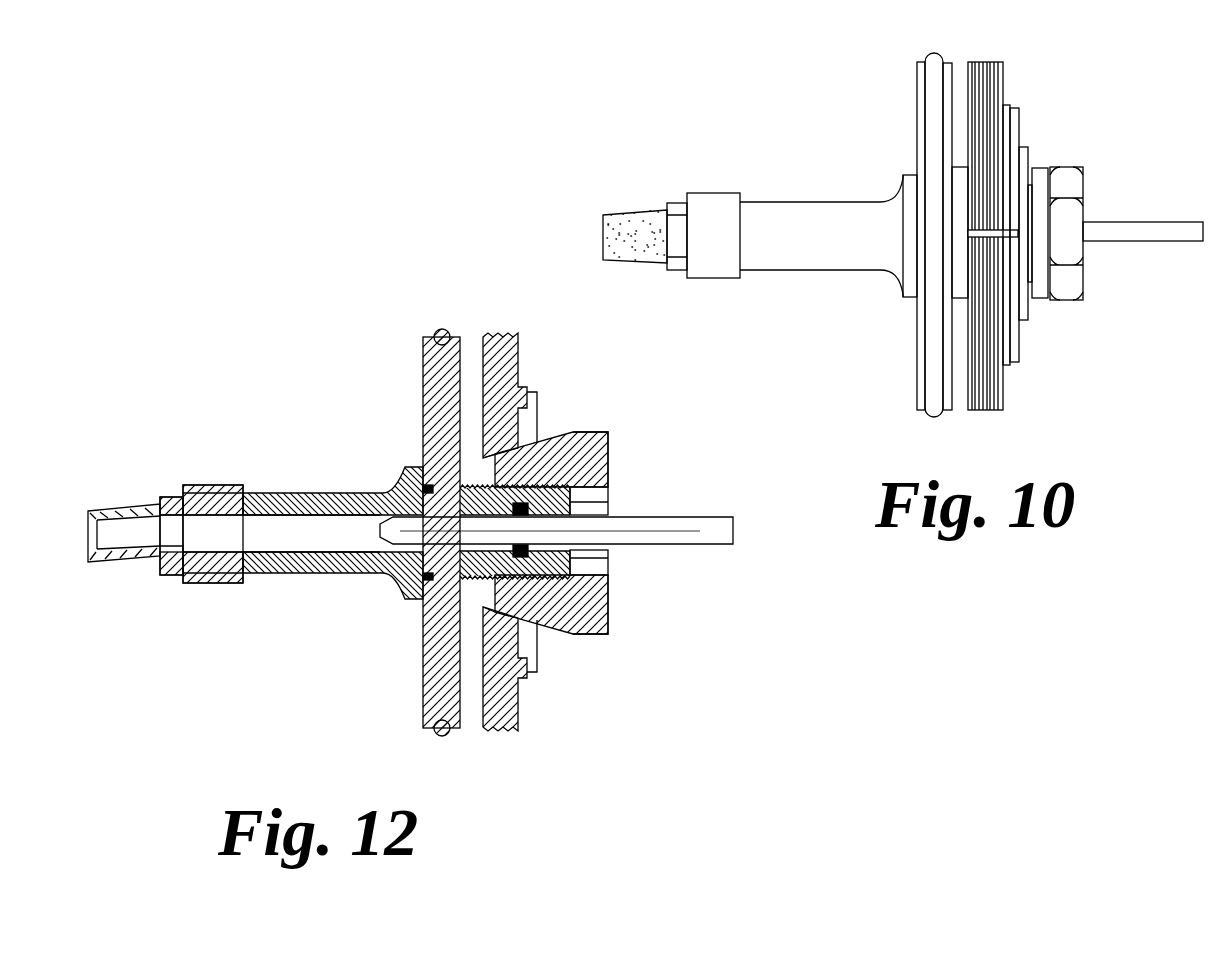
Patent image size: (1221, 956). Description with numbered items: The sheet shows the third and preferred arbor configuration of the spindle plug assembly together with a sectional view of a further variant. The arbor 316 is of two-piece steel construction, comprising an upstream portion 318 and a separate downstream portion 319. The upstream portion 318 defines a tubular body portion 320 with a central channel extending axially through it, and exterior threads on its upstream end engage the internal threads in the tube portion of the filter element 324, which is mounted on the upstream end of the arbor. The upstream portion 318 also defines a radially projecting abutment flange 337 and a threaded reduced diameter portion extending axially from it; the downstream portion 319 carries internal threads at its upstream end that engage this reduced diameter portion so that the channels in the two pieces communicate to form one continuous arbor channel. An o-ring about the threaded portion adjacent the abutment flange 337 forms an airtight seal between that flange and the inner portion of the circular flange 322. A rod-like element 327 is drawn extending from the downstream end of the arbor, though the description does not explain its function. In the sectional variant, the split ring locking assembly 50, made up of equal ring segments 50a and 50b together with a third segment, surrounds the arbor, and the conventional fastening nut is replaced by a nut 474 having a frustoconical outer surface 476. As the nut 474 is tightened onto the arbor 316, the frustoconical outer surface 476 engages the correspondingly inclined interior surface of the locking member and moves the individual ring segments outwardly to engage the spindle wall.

In FIG. 10, the split ring locking assembly 50 is at (1040, 105).
In FIG. 12, the split ring locking assembly 50 is at (562, 521).
In FIG. 12, the ring segment 50a is at (518, 352).
In FIG. 12, the ring segment 50b is at (518, 700).
In FIG. 10, the arbor 316 is at (756, 201).
In FIG. 12, the arbor 316 is at (348, 497).
In FIG. 10, the upstream portion 318 is at (830, 274).
In FIG. 10, the downstream portion 319 is at (960, 303).
In FIG. 10, the tubular body portion 320 is at (797, 230).
In FIG. 10, the circular flange 322 is at (953, 66).
In FIG. 12, the circular flange 322 is at (423, 380).
In FIG. 10, the filter element 324 is at (645, 213).
In FIG. 12, the filter element 324 is at (145, 505).
In FIG. 10, the drive rod 327 is at (1145, 222).
In FIG. 12, the drive rod 327 is at (694, 516).
In FIG. 10, the abutment flange 337 is at (904, 173).
In FIG. 12, the nut 474 is at (592, 432).
In FIG. 12, the frustoconical outer surface 476 is at (553, 433).